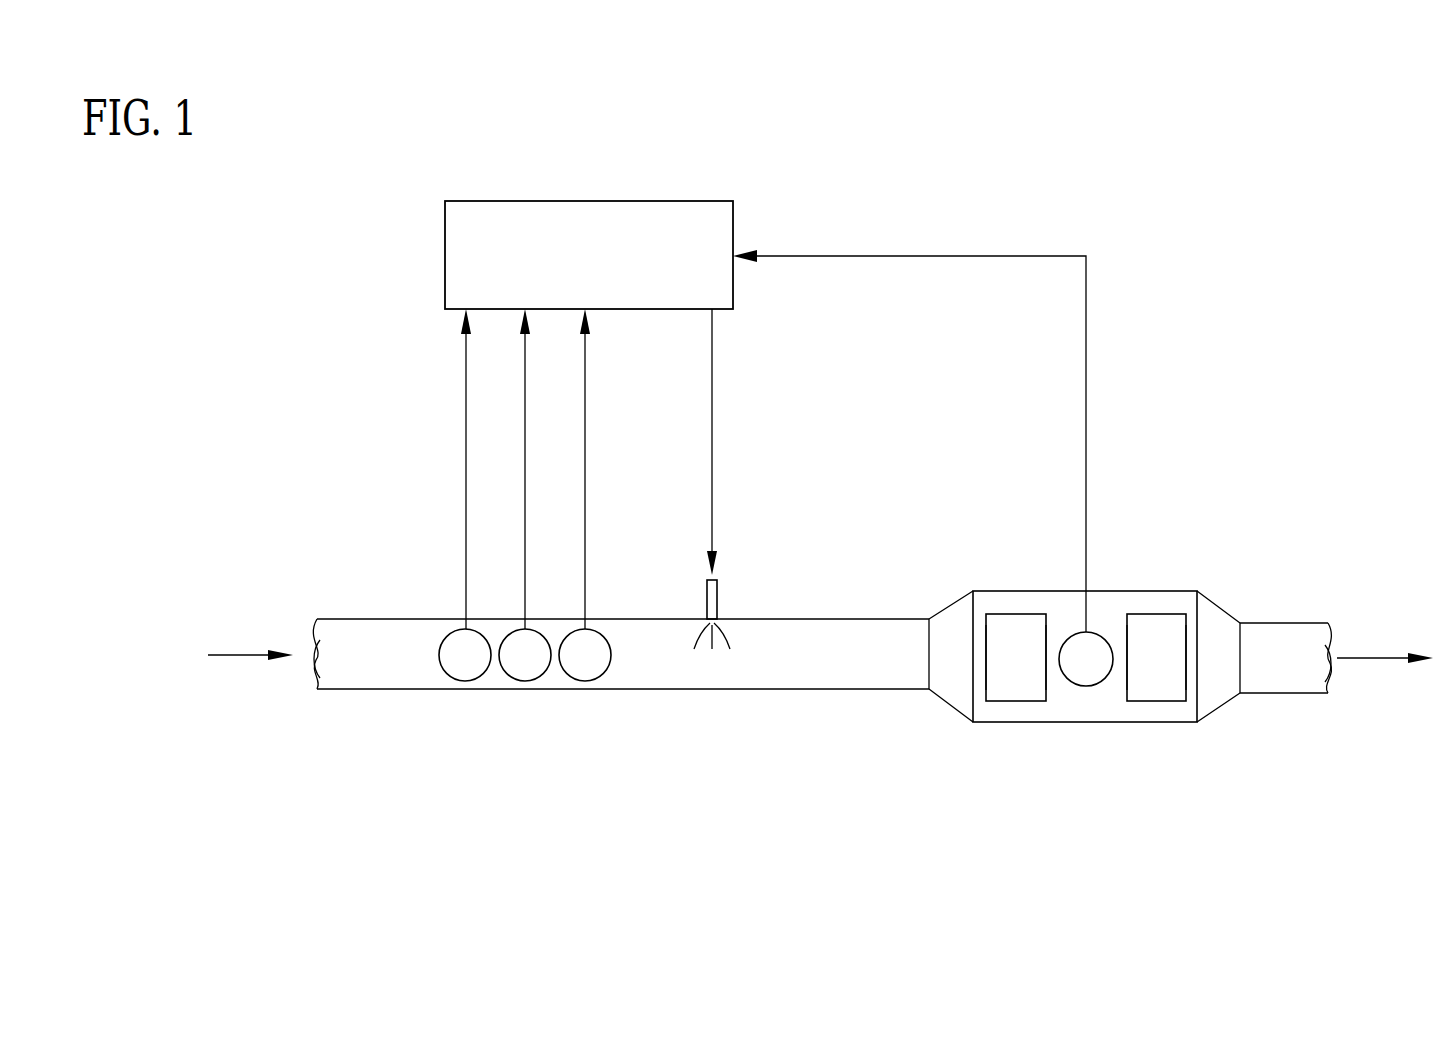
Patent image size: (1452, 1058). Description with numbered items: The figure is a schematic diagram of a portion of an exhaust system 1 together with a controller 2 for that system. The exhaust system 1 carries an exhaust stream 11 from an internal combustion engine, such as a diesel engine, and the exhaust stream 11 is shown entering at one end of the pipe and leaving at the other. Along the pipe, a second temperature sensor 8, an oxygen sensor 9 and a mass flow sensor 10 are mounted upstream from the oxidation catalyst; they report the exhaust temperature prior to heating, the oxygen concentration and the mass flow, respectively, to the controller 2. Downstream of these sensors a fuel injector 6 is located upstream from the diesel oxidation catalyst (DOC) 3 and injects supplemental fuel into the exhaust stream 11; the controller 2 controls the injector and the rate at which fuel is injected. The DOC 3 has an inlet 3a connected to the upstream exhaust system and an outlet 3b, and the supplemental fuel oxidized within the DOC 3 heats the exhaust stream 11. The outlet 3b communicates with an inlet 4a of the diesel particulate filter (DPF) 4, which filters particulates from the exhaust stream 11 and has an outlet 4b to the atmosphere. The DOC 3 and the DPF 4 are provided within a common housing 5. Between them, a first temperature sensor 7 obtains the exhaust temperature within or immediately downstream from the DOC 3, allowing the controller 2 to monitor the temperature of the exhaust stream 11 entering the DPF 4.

The exhaust system 1 is at (806, 754).
The controller 2 is at (445, 245).
The diesel oxidation catalyst (DOC) 3 is at (1021, 701).
The inlet 3a is at (986, 663).
The outlet 3b is at (1046, 686).
The diesel particulate filter (DPF) 4 is at (1147, 701).
The inlet 4a is at (1127, 625).
The outlet 4b is at (1186, 633).
The housing 5 is at (1098, 722).
The fuel injector 6 is at (717, 603).
The first temperature sensor 7 is at (1070, 636).
The second temperature sensor 8 is at (470, 681).
The oxygen sensor 9 is at (530, 681).
The mass flow sensor 10 is at (597, 680).
The exhaust stream 11 is at (245, 655).